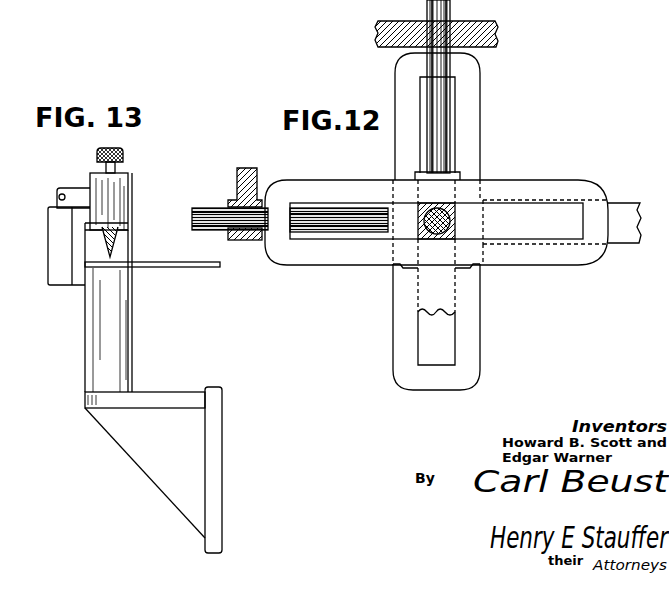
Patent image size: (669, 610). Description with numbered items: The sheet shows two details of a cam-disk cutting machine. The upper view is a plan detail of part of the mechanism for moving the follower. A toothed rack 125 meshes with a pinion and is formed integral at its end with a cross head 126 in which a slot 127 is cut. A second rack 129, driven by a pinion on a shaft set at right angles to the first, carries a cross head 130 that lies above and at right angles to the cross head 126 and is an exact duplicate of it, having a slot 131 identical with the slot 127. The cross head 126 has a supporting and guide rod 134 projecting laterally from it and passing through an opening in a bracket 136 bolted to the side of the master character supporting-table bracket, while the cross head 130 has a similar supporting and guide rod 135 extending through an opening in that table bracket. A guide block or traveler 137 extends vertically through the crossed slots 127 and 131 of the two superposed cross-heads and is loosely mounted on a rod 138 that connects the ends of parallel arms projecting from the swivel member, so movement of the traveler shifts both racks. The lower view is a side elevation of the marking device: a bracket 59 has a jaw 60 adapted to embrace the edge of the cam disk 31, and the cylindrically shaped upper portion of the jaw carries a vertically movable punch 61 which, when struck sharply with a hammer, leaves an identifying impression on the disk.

In FIG. 13, the cam disk 31 is at (167, 263).
In FIG. 13, the bracket 59 is at (130, 452).
In FIG. 13, the jaw 60 is at (55, 245).
In FIG. 13, the punch 61 is at (123, 154).
In FIG. 12, the rack 125 is at (612, 203).
In FIG. 12, the cross head 126 is at (478, 333).
In FIG. 12, the slot 127 is at (447, 354).
In FIG. 12, the rack 129 is at (425, 297).
In FIG. 12, the cross head 130 is at (556, 165).
In FIG. 12, the slot 131 is at (563, 206).
In FIG. 12, the supporting and guide rod 134 is at (228, 207).
In FIG. 12, the supporting and guide rod 135 is at (448, 87).
In FIG. 12, the bracket 136 is at (247, 168).
In FIG. 12, the guide block or traveler 137 is at (455, 210).
In FIG. 12, the rod 138 is at (455, 228).